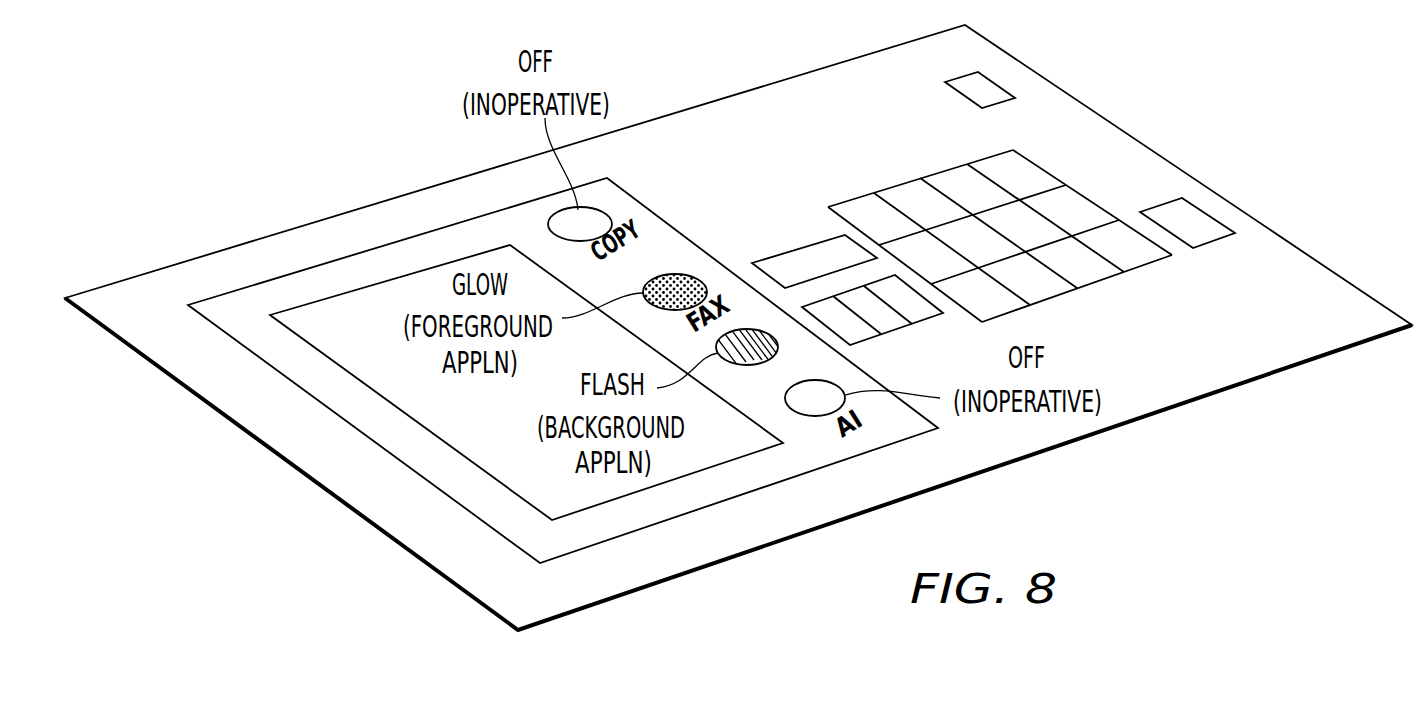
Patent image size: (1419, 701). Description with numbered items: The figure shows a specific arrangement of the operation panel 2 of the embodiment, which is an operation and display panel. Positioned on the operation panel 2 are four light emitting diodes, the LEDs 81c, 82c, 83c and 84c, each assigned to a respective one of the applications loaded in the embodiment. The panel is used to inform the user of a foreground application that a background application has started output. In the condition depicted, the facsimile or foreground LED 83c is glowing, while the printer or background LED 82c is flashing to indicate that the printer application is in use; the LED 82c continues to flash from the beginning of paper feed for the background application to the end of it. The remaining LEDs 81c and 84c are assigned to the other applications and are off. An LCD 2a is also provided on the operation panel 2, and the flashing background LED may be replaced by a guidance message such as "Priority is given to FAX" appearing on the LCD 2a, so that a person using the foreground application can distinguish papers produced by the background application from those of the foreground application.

The operation panel 2 is at (1056, 458).
The LCD 2a is at (675, 553).
The LED 81c is at (598, 213).
The printer or background LED 82c is at (778, 345).
The facsimile or foreground LED 83c is at (690, 284).
The LED 84c is at (805, 411).